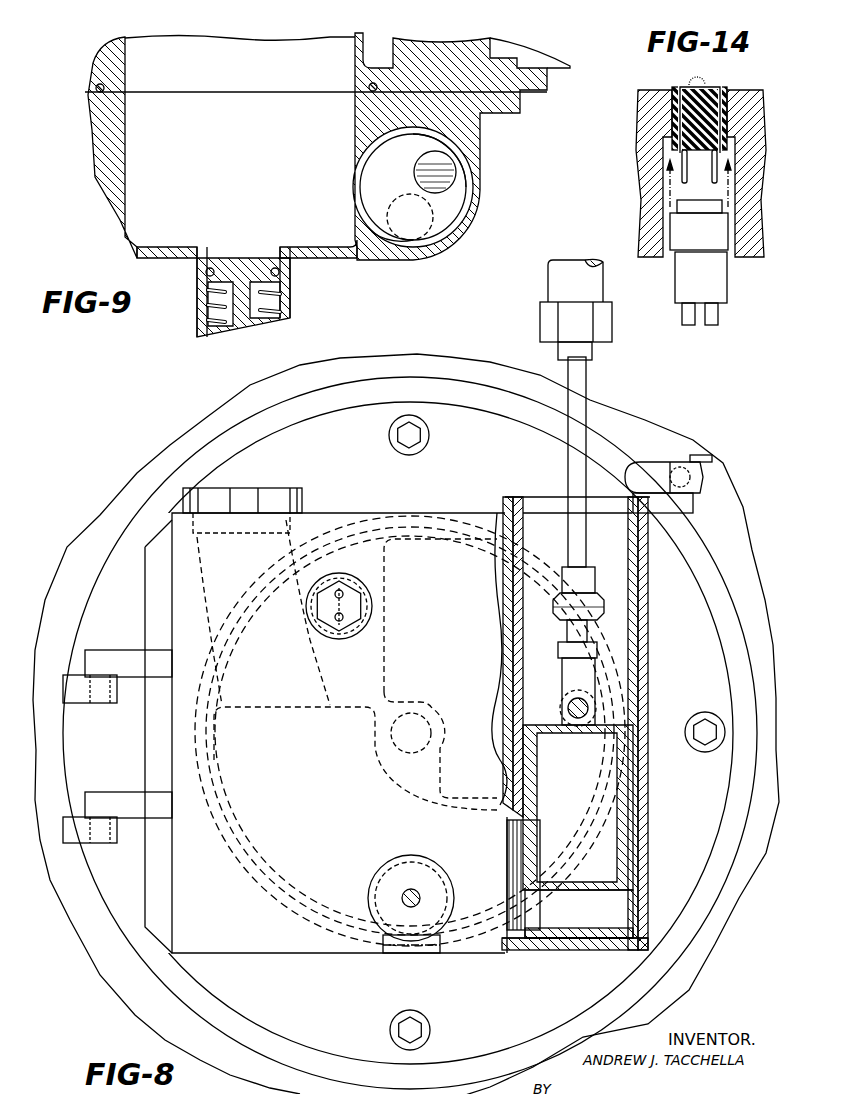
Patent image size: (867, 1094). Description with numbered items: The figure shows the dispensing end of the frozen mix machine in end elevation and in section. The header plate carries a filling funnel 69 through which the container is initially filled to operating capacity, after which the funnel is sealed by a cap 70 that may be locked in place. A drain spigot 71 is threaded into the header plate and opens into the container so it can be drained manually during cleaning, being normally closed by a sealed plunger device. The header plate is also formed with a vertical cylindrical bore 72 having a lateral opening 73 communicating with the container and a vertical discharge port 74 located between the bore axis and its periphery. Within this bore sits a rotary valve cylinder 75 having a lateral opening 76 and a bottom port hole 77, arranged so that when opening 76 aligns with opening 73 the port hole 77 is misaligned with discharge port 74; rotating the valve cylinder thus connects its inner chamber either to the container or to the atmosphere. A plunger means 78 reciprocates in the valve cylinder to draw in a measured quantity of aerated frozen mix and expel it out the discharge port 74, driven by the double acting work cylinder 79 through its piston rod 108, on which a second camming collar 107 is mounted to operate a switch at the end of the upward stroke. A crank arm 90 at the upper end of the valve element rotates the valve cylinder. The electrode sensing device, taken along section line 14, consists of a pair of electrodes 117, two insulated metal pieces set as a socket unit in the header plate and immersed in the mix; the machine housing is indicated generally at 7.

In FIG. 9, the housing 7 is at (483, 160).
In FIG. 14, the housing 7 is at (752, 115).
In FIG. 8, the housing 7 is at (450, 513).
In FIG. 8, the bolt / section line 14 is at (364, 669).
In FIG. 8, the filling funnel 69 is at (206, 587).
In FIG. 8, the cap 70 is at (277, 492).
In FIG. 8, the drain spigot 71 is at (383, 867).
In FIG. 8, the vertical cylindrical bore 72 is at (520, 642).
In FIG. 9, the lateral opening 73 is at (370, 227).
In FIG. 8, the lateral opening 73 is at (517, 827).
In FIG. 9, the vertical discharge port 74 is at (437, 227).
In FIG. 8, the vertical discharge port 74 is at (557, 950).
In FIG. 9, the rotary valve cylinder 75 is at (433, 137).
In FIG. 8, the rotary valve cylinder 75 is at (632, 617).
In FIG. 9, the lateral opening 76 is at (357, 167).
In FIG. 9, the bottom port hole 77 is at (456, 184).
In FIG. 8, the plunger means 78 is at (557, 730).
In FIG. 8, the double acting work cylinder 79 is at (548, 293).
In FIG. 8, the crank arm 90 is at (693, 513).
In FIG. 8, the second camming collar 107 is at (592, 568).
In FIG. 8, the piston rod 108 is at (584, 392).
In FIG. 14, the electrodes 117 is at (715, 84).